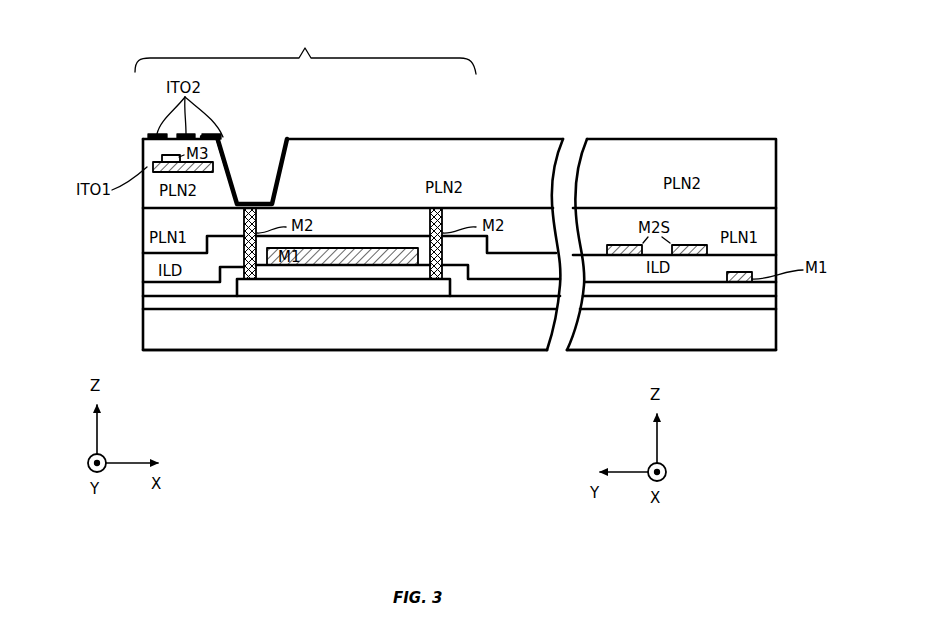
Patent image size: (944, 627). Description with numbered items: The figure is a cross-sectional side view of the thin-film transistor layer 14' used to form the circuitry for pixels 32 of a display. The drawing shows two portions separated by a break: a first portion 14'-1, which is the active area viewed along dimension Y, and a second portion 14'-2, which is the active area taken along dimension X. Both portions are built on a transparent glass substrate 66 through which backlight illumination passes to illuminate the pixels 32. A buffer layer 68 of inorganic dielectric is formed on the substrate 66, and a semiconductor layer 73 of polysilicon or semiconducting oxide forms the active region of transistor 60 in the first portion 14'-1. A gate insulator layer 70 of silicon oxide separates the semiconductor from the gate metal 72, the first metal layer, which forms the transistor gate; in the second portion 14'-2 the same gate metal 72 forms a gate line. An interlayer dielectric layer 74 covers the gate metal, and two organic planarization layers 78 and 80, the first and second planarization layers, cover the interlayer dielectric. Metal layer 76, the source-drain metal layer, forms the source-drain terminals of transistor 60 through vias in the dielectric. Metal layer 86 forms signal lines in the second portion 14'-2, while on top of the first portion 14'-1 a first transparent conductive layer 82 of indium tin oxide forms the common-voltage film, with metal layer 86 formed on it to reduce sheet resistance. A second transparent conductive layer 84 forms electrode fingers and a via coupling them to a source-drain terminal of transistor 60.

The thin-film transistor layer 14' is at (65, 56).
The first portion 14'-1 is at (321, 424).
The second portion 14'-2 is at (731, 424).
The pixel 32 is at (305, 50).
The transistor 60 is at (379, 341).
The substrate 66 is at (157, 333).
The buffer layer 68 is at (150, 300).
The gate insulator layer 70 is at (152, 287).
The gate metal 72 is at (345, 247).
The semiconductor layer 73 is at (290, 291).
The interlayer dielectric layer 74 is at (523, 278).
The metal layer 76 is at (257, 224).
The planarization layer 78 is at (148, 214).
The planarization layer 80 is at (466, 160).
The first transparent conductive layer 82 is at (153, 163).
The second transparent conductive layer 84 is at (233, 178).
The metal layer 86 is at (163, 154).